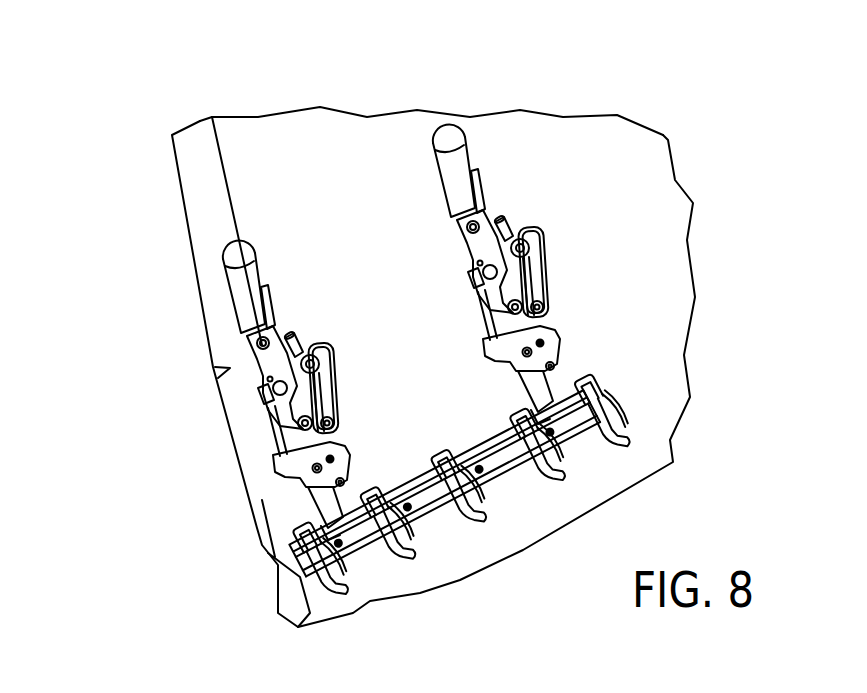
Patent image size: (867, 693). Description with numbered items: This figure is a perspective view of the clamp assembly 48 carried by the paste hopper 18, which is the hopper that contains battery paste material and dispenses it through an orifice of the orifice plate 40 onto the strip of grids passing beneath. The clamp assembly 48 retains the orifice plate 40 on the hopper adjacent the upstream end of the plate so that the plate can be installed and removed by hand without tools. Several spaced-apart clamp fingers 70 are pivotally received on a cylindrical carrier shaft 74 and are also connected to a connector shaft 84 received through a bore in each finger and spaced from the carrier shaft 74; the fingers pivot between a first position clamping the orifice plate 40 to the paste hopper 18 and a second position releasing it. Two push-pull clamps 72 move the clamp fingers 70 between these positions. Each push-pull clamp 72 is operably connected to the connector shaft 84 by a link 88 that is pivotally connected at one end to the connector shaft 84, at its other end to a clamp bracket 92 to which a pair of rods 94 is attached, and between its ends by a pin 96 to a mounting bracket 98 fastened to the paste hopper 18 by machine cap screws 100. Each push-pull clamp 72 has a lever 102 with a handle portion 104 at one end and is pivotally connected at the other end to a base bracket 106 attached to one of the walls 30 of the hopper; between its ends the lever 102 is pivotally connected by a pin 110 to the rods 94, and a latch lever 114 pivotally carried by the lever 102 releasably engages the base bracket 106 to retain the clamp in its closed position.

The paste hopper 18 is at (433, 353).
The walls 30 is at (362, 155).
The orifice plate 40 is at (482, 501).
The clamp assembly 48 is at (548, 204).
The clamp fingers 70 is at (467, 512).
The push-pull clamps 72 is at (409, 300).
The carrier shaft 74 is at (352, 553).
The connector shaft 84 is at (478, 441).
The link 88 is at (322, 492).
The clamp bracket 92 is at (275, 473).
The rods 94 is at (265, 416).
The pin 96 is at (545, 370).
The mounting bracket 98 is at (340, 412).
The machine cap screws 100 is at (333, 460).
The lever 102 is at (233, 348).
The handle portion 104 is at (223, 284).
The base bracket 106 is at (545, 268).
The pin 110 is at (318, 356).
The latch lever 114 is at (285, 303).